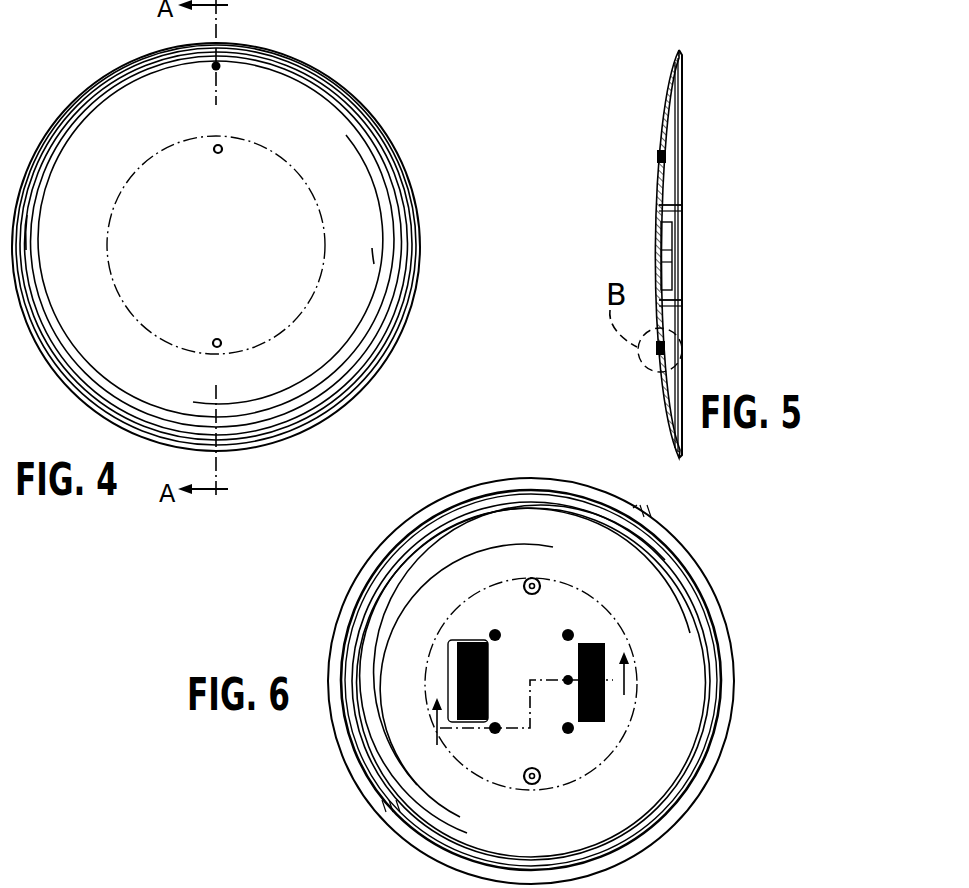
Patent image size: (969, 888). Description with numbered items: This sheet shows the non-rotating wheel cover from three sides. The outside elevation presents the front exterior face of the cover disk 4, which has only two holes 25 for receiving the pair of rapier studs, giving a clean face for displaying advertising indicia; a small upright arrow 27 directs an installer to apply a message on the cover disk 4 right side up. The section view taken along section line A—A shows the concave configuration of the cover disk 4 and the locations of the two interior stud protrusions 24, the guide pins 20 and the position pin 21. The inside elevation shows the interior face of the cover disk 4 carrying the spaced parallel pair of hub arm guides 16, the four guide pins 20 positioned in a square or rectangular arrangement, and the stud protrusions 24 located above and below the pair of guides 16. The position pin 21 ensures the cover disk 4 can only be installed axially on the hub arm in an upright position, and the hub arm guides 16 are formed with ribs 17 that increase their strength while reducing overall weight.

In FIG. 4, the cover disk 4 is at (395, 171).
In FIG. 5, the cover disk 4 is at (658, 112).
In FIG. 6, the cover disk 4 is at (697, 681).
In FIG. 6, the hub arm guides 16 is at (457, 683).
In FIG. 6, the ribs 17 is at (330, 887).
In FIG. 5, the guide pins 20 is at (668, 205).
In FIG. 6, the guide pins 20 is at (495, 633).
In FIG. 5, the position pin 21 is at (668, 270).
In FIG. 6, the position pin 21 is at (568, 680).
In FIG. 5, the stud protrusions 24 is at (657, 155).
In FIG. 6, the stud protrusions 24 is at (524, 586).
In FIG. 4, the holes 25 is at (214, 149).
In FIG. 4, the upright arrow 27 is at (214, 66).